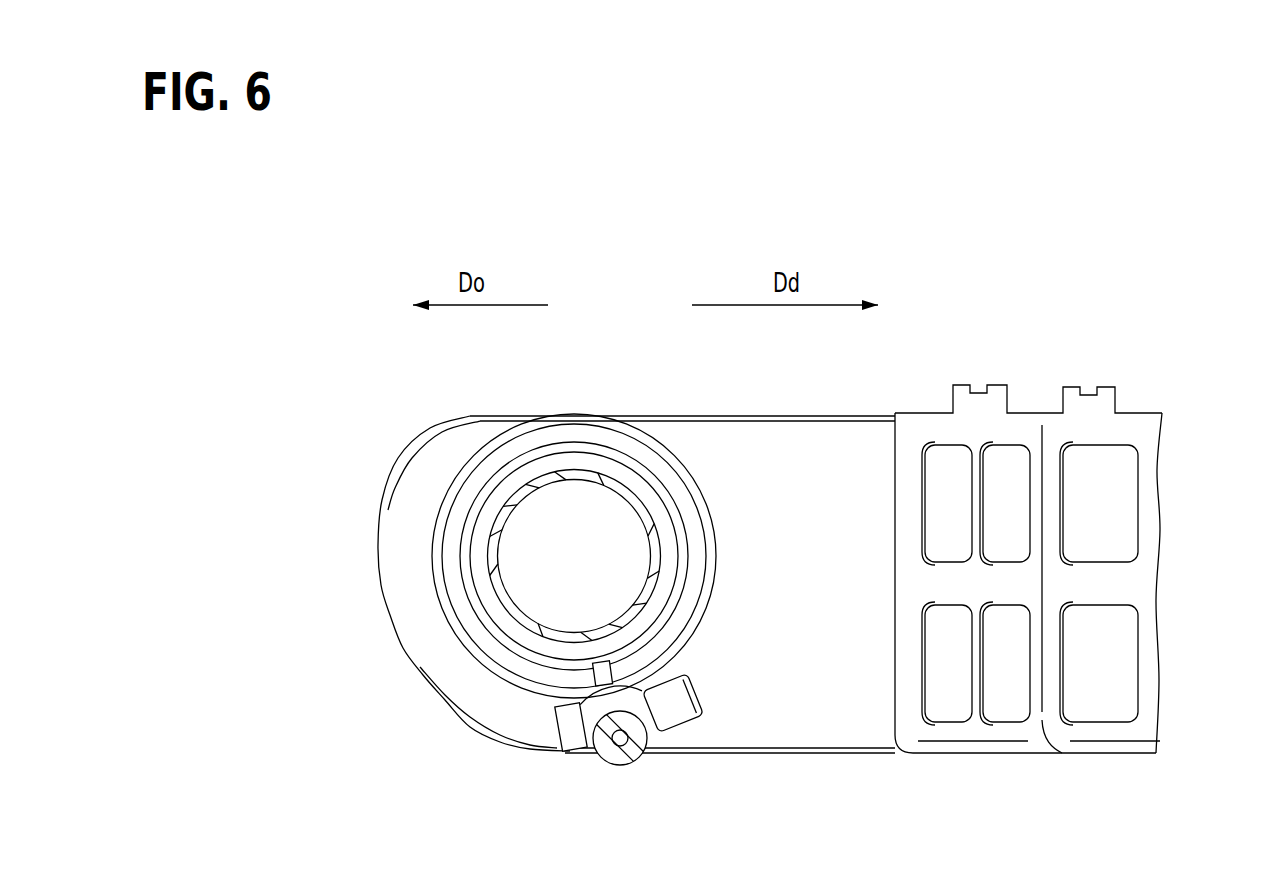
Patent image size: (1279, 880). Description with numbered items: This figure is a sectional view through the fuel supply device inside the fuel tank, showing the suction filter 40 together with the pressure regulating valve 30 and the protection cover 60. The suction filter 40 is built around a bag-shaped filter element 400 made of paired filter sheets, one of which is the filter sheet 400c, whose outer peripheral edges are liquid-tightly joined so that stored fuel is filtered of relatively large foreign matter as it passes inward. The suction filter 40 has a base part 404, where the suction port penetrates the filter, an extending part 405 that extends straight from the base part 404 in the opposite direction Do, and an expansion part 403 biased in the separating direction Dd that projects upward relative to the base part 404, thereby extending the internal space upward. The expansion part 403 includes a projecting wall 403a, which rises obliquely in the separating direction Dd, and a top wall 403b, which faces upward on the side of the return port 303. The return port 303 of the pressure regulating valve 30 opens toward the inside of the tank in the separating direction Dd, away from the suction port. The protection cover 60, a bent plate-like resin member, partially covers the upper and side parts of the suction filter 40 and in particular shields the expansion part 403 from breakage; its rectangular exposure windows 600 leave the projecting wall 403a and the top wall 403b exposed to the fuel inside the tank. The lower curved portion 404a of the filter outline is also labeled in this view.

The pressure regulating valve 30 is at (674, 753).
The return port 303 is at (708, 712).
The suction filter 40 is at (511, 582).
The protection cover 60 is at (1074, 586).
The filter element 400 is at (754, 784).
The filter sheet 400c is at (842, 735).
The expansion part 403 is at (1013, 530).
The projecting wall 403a is at (953, 672).
The top wall 403b is at (1080, 643).
The base part 404 is at (706, 601).
The housing lower curved wall 404a is at (383, 613).
The extending part 405 is at (413, 507).
The exposure windows 600 is at (1087, 586).